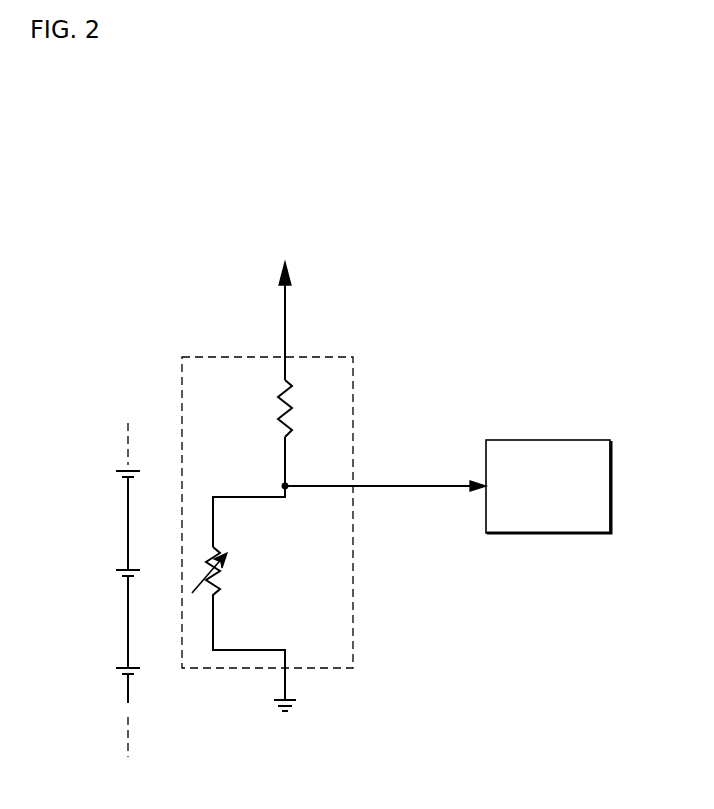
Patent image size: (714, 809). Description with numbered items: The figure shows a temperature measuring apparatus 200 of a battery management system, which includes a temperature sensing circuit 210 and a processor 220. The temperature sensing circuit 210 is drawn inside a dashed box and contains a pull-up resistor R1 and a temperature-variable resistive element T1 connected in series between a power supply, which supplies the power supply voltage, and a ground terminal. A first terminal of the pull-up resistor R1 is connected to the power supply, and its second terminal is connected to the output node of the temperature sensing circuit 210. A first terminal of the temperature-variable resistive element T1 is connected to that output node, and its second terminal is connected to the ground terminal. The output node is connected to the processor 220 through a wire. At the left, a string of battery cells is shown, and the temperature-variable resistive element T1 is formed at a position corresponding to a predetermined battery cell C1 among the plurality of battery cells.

The temperature measuring apparatus 200 is at (414, 267).
The temperature sensing circuit 210 is at (203, 357).
The processor 220 is at (543, 440).
The pull-up resistor R1 is at (292, 400).
The temperature-variable resistive element T1 is at (215, 582).
The battery cell C1 is at (122, 567).